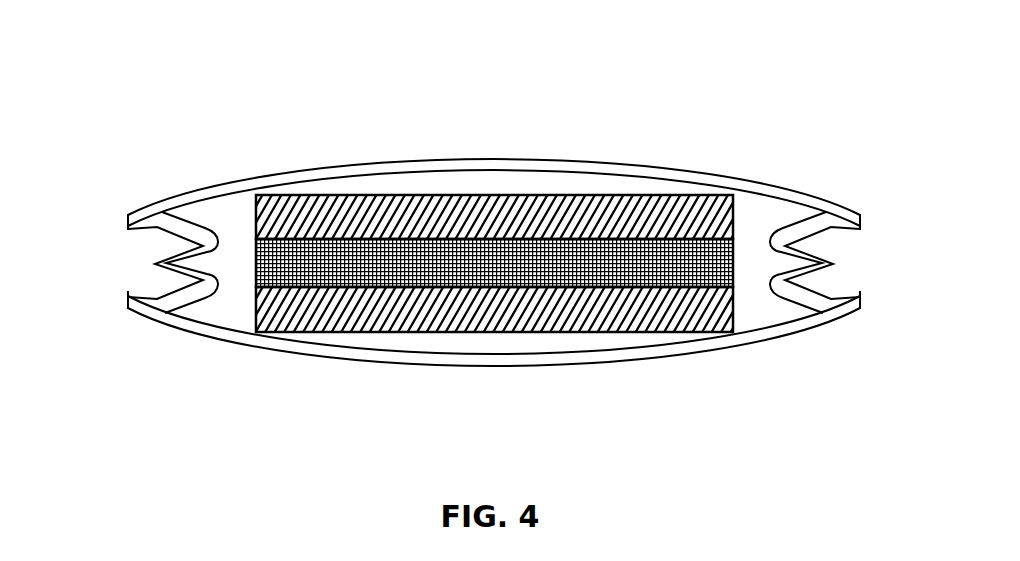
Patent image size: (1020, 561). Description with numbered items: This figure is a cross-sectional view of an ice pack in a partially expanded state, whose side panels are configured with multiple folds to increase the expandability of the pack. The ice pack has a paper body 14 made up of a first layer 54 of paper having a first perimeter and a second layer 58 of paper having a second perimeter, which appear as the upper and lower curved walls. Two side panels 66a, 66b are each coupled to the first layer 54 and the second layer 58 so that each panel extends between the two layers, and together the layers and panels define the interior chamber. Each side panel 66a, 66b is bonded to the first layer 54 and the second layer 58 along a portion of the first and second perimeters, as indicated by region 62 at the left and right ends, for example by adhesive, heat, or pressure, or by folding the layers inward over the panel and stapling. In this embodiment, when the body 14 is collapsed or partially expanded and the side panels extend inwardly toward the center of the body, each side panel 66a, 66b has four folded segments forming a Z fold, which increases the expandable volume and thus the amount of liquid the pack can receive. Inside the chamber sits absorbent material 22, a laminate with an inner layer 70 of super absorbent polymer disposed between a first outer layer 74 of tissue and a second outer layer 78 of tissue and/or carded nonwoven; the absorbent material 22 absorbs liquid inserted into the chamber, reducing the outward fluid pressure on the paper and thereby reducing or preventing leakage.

The body 14 is at (490, 241).
The absorbent material 22 is at (542, 283).
The first layer 54 is at (280, 173).
The second layer 58 is at (240, 344).
The region 62 is at (124, 302).
The side panel 66a is at (834, 264).
The side panel 66b is at (154, 263).
The inner layer 70 is at (738, 262).
The first outer layer 74 is at (655, 333).
The second outer layer 78 is at (622, 195).